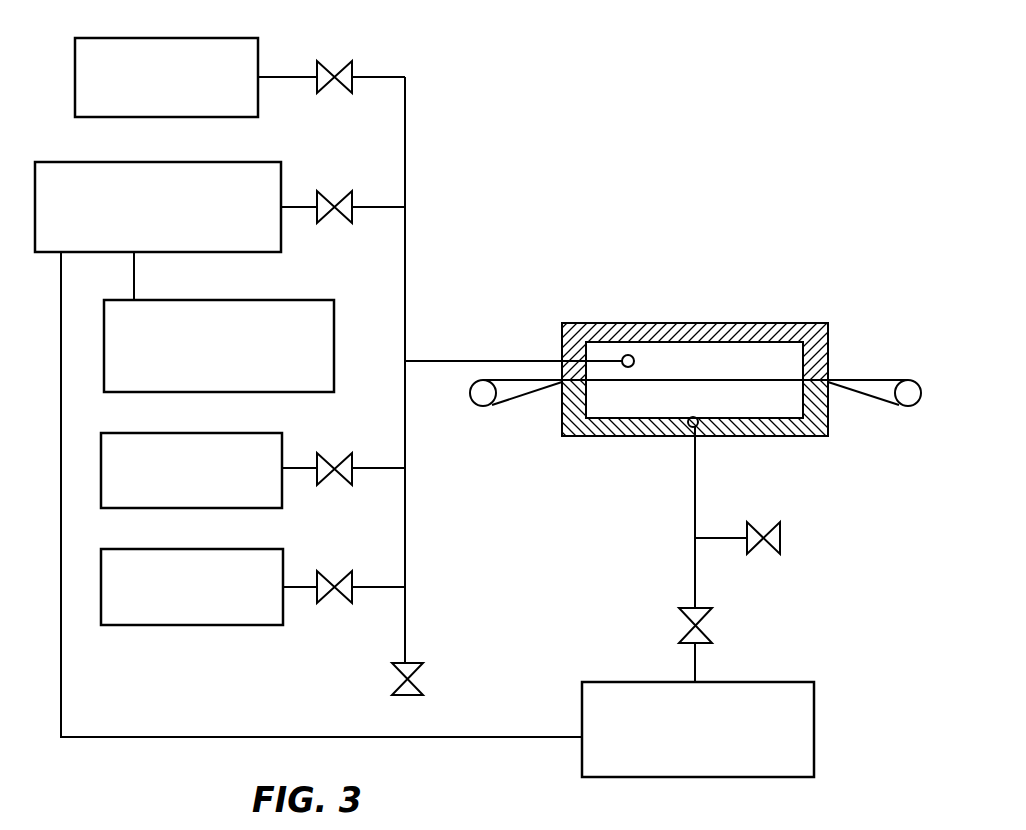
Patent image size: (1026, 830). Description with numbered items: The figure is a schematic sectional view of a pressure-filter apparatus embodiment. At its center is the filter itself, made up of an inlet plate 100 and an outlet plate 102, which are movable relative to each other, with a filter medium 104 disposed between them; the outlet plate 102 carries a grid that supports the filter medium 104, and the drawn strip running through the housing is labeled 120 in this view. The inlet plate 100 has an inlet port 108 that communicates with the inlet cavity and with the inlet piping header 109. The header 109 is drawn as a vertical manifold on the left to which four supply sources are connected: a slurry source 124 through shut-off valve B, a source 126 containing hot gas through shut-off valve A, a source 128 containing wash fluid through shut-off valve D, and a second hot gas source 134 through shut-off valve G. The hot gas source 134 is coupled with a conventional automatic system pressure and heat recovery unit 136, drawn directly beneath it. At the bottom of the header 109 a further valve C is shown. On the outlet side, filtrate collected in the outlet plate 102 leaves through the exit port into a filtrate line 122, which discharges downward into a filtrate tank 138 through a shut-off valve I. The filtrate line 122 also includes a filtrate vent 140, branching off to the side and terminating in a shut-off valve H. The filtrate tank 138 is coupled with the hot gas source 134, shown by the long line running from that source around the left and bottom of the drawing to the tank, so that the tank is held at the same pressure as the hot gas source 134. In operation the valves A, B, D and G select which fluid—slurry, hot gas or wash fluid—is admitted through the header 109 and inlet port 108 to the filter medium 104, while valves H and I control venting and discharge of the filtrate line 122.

The inlet plate 100 is at (720, 323).
The outlet plate 102 is at (620, 437).
The filter medium 104 is at (853, 375).
The inlet port 108 is at (628, 354).
The inlet piping header 109 is at (407, 247).
The filter medium 120 is at (765, 374).
The filtrate line 122 is at (697, 455).
The slurry source 124 is at (148, 626).
The hot gas source 126 is at (130, 118).
The wash fluid source 128 is at (148, 509).
The hot gas source 134 is at (200, 253).
The system pressure and heat recovery unit 136 is at (200, 393).
The filtrate tank 138 is at (783, 681).
The filtrate vent 140 is at (712, 540).
The shut-off valve A is at (340, 62).
The shut-off valve B is at (343, 572).
The valve C is at (398, 672).
The shut-off valve D is at (345, 455).
The shut-off valve G is at (341, 192).
The shut-off valve H is at (760, 525).
The shut-off valve I is at (682, 621).